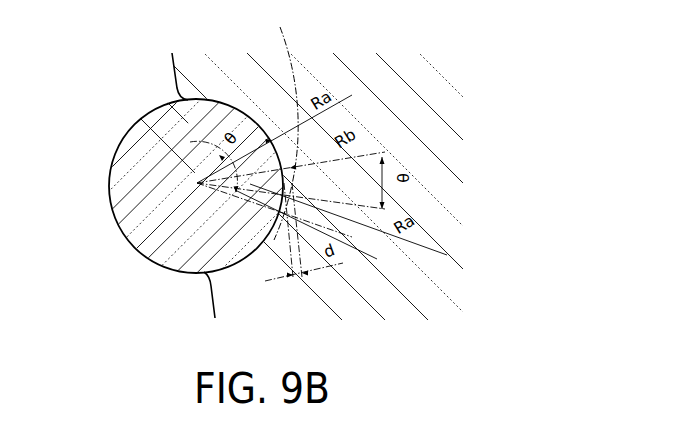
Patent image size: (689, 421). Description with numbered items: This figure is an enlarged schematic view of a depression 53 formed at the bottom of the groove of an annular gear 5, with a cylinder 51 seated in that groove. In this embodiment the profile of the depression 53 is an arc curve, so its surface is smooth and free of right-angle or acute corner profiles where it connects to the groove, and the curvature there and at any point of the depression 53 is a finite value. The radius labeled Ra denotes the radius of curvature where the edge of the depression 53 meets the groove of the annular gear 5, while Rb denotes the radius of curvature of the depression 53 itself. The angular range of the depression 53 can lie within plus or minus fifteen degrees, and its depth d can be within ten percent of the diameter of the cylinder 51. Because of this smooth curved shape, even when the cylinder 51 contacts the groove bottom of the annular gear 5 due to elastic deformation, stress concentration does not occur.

The annular gear 5 is at (197, 74).
The cylinder 51 is at (112, 174).
The depression 53 is at (281, 122).